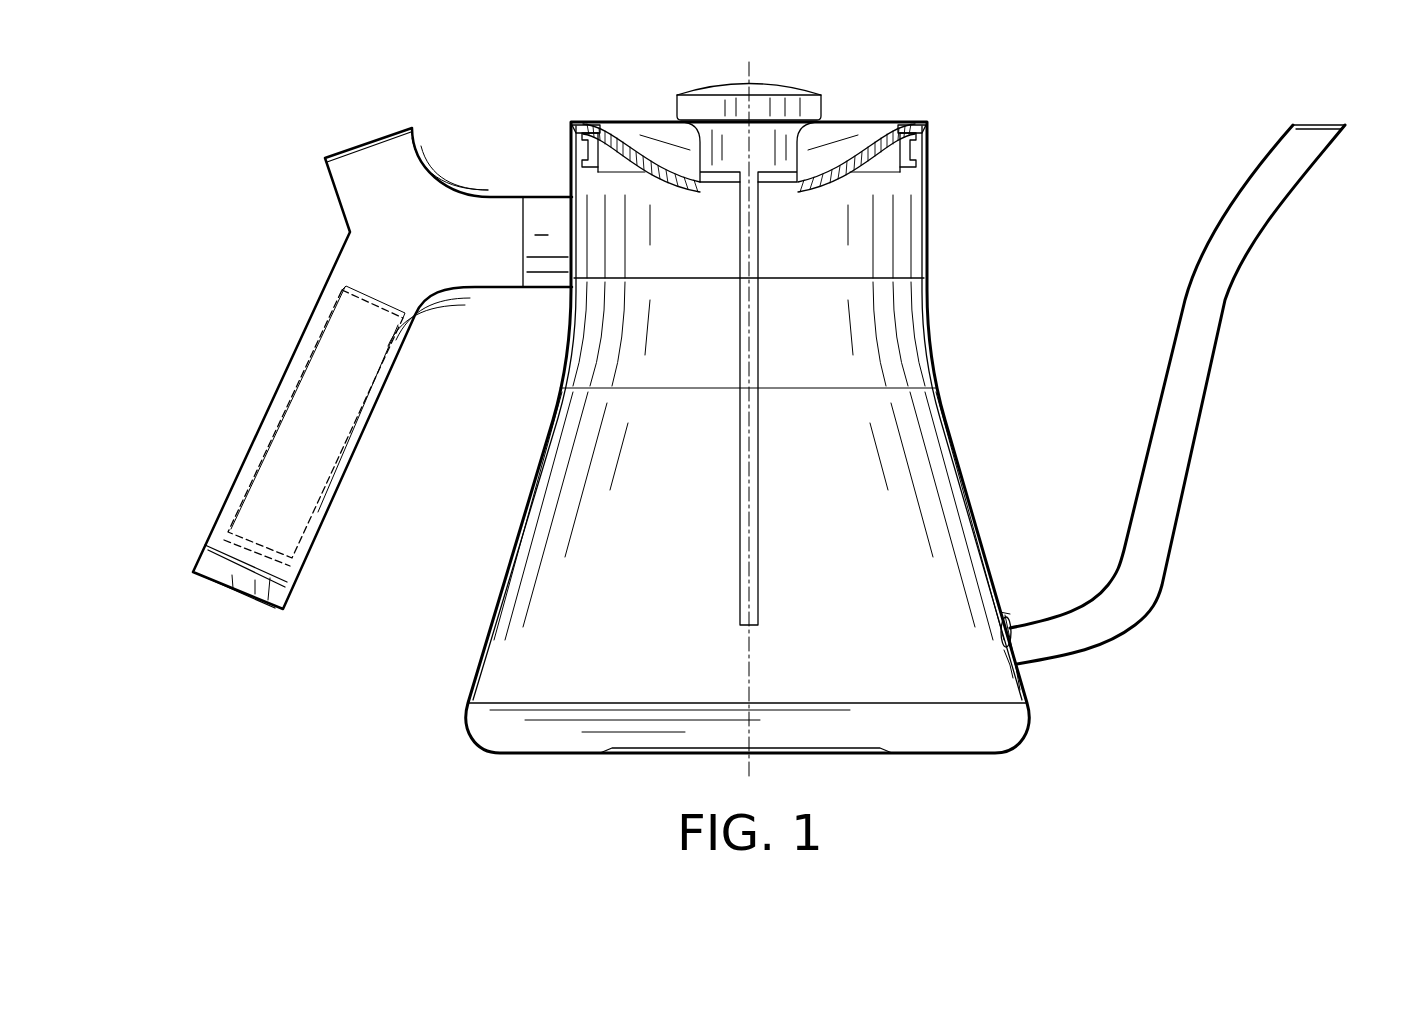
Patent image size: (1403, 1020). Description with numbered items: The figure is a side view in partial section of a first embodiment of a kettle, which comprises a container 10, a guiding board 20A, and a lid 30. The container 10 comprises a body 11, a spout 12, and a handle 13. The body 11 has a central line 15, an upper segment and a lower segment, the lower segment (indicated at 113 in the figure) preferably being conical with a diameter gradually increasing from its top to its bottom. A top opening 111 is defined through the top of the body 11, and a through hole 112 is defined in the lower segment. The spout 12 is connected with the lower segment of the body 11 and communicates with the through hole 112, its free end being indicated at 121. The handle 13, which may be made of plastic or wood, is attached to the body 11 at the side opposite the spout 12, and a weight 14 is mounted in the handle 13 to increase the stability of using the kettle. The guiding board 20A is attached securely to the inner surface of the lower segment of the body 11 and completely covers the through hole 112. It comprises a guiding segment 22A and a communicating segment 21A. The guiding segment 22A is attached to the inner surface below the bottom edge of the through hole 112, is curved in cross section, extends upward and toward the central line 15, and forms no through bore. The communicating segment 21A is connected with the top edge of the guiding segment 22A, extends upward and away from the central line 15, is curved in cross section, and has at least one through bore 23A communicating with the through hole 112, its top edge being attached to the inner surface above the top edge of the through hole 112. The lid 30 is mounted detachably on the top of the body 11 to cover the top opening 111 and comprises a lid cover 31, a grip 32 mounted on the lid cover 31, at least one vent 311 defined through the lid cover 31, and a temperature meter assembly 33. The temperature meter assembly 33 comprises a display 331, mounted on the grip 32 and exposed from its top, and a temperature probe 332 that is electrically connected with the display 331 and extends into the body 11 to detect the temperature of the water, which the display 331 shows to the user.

The container 10 is at (935, 272).
The body 11 is at (938, 345).
The top opening 111 is at (908, 152).
The through hole 112 is at (1020, 652).
The body side wall 113 is at (976, 502).
The spout 12 is at (1186, 507).
The spout outlet 121 is at (1320, 118).
The handle 13 is at (285, 396).
The weight 14 is at (318, 448).
The central line 15 is at (760, 72).
The guiding board 20A is at (977, 659).
The communicating segment 21A is at (1002, 638).
The guiding segment 22A is at (1003, 656).
The through bore 23A is at (1003, 620).
The lid 30 is at (833, 94).
The lid cover 31 is at (625, 137).
The vent 311 is at (905, 128).
The grip 32 is at (790, 133).
The temperature meter assembly 33 is at (726, 76).
The display 331 is at (710, 84).
The temperature probe 332 is at (760, 482).